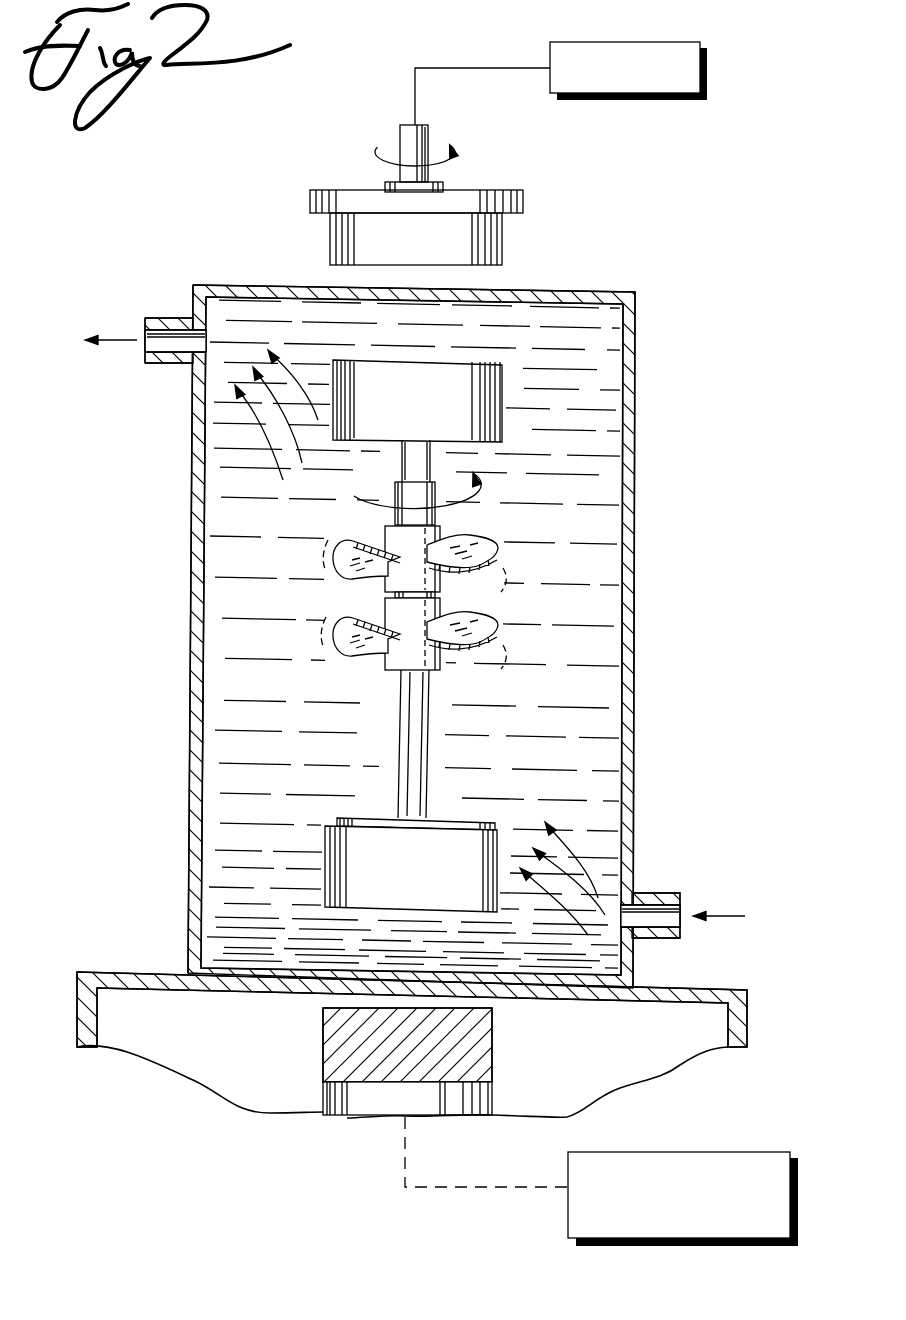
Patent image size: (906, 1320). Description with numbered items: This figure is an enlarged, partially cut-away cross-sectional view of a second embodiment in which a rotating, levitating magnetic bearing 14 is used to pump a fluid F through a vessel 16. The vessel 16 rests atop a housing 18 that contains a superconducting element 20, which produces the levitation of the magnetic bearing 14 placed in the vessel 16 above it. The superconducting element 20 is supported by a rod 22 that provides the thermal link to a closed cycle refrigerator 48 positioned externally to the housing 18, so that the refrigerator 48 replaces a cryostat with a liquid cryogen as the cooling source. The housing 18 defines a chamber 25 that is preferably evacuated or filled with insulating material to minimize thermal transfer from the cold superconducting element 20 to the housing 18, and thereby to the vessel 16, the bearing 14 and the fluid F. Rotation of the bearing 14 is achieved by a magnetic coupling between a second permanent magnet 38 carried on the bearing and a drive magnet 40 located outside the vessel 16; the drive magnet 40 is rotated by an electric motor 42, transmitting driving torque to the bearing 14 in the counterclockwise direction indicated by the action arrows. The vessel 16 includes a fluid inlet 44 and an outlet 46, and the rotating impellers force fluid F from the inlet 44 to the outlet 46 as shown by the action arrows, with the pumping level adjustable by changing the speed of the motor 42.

The magnetic bearing 14 is at (556, 697).
The vessel 16 is at (633, 358).
The housing 18 is at (733, 990).
The superconducting element 20 is at (473, 1050).
The rod 22 is at (347, 1117).
The chamber 25 is at (195, 1067).
The second permanent magnet 38 is at (487, 420).
The drive magnet 40 is at (472, 247).
The electric motor 42 is at (692, 104).
The fluid inlet 44 is at (683, 897).
The outlet 46 is at (160, 318).
The closed cycle refrigerator 48 is at (568, 1213).
The fluid F is at (597, 822).